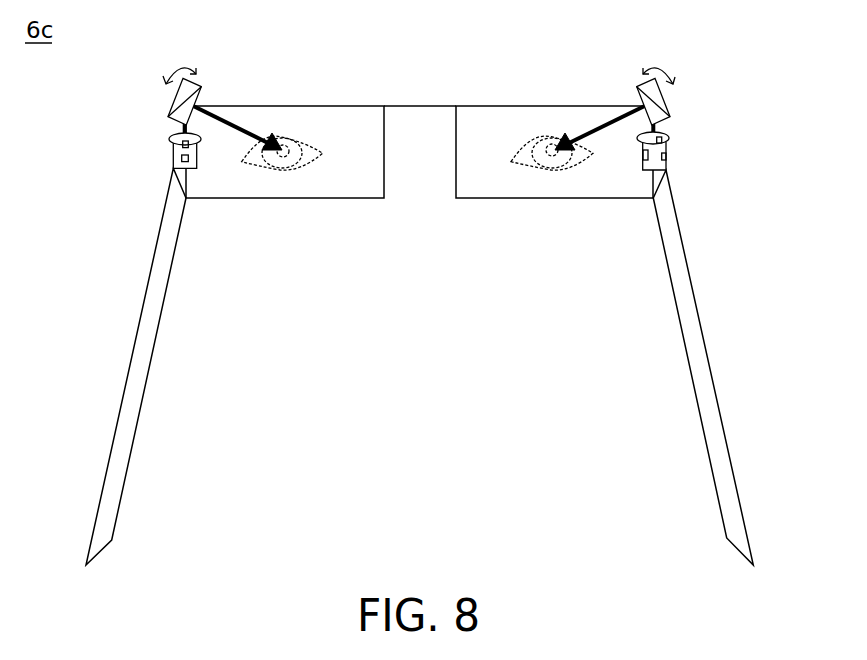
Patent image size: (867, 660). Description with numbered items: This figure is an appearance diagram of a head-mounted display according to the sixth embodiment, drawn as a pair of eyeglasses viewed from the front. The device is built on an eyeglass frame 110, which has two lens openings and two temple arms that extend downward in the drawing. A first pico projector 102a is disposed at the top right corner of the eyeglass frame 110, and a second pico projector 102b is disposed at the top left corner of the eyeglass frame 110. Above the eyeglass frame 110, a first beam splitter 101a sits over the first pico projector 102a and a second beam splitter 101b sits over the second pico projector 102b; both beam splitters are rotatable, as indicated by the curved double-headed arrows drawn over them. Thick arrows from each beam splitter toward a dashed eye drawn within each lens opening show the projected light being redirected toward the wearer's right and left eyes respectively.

The first beam splitter 101a is at (671, 110).
The second beam splitter 101b is at (168, 116).
The first pico projector 102a is at (667, 138).
The second pico projector 102b is at (169, 140).
The eyeglass frame 110 is at (690, 320).